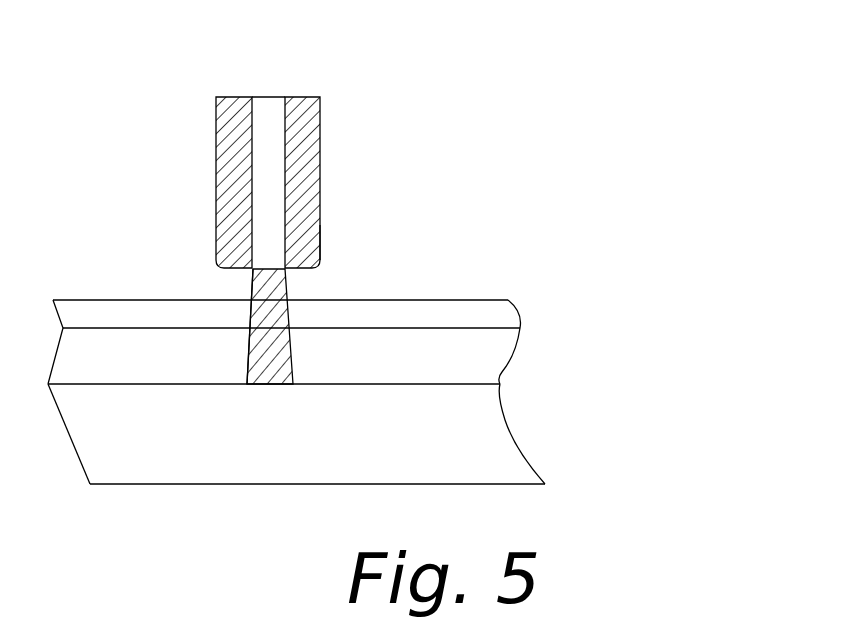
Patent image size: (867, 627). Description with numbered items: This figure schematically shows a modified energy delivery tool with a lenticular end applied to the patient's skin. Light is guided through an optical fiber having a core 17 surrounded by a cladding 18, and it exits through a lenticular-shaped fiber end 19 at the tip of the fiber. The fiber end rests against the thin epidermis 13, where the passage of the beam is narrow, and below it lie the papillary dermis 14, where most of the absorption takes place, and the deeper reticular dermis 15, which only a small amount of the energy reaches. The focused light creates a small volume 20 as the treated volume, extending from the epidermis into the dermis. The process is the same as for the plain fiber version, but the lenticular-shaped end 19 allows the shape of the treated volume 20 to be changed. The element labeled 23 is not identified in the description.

The epidermis 13 is at (470, 305).
The papillary dermis 14 is at (107, 315).
The reticular dermis 15 is at (120, 477).
The core 17 is at (260, 105).
The cladding 18 is at (303, 100).
The lenticular-shaped fiber end 19 is at (321, 241).
The small volume 20 is at (288, 360).
The weld seam edge 23 is at (255, 313).